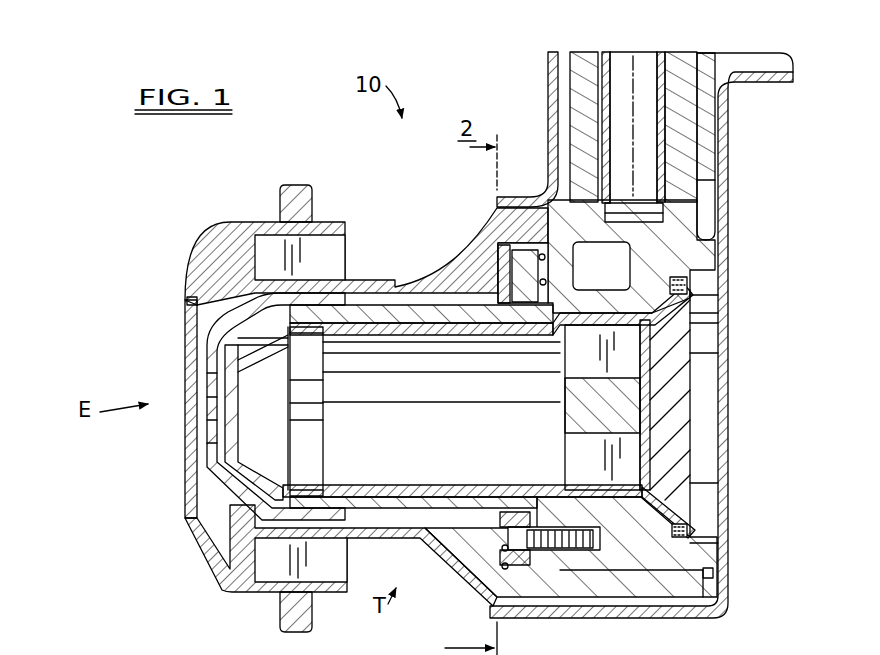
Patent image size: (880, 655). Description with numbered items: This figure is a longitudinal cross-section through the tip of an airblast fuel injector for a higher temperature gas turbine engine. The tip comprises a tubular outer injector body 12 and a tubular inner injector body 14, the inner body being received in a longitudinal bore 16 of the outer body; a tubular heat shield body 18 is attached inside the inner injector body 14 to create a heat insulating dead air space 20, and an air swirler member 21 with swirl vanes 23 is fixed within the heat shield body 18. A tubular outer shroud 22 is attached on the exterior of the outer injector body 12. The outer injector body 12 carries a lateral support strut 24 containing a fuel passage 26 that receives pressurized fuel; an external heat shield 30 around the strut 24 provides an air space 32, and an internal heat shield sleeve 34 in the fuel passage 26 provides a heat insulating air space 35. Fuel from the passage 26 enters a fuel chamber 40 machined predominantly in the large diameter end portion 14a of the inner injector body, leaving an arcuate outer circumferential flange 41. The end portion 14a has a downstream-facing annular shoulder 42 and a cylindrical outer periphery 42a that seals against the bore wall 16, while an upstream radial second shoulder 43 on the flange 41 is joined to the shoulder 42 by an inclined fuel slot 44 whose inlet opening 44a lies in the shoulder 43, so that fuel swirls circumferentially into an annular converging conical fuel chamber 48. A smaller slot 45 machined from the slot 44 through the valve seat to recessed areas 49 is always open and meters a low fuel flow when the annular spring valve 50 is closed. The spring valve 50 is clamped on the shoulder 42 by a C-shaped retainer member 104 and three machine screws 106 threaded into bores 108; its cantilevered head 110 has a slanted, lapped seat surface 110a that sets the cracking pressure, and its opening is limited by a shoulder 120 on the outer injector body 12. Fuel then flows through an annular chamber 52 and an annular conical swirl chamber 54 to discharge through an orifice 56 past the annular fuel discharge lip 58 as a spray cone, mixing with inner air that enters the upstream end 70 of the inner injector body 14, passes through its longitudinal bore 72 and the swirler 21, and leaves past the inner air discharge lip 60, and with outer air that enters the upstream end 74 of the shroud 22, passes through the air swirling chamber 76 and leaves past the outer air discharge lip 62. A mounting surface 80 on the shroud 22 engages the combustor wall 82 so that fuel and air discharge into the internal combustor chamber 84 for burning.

The outer injector body 12 is at (365, 280).
The inner injector body 14 is at (427, 322).
The large diameter end portion 14a is at (687, 262).
The longitudinal bore 16 is at (580, 550).
The tubular heat shield body 18 is at (697, 308).
The heat insulating dead air space 20 is at (383, 485).
The air swirler member 21 is at (652, 407).
The tubular outer shroud 22 is at (236, 220).
The swirl vanes 23 is at (563, 380).
The support strut 24 is at (585, 52).
The fuel passage 26 is at (645, 52).
The external heat shield 30 is at (550, 70).
The air space 32 is at (562, 83).
The internal heat shield sleeve 34 is at (664, 150).
The heat insulating air space 35 is at (605, 52).
The fuel chamber 40 is at (652, 252).
The arcuate outer circumferential flange 41 is at (535, 198).
The downstream-facing annular shoulder 42 is at (540, 511).
The cylindrical outer periphery 42a is at (547, 566).
The second shoulder 43 is at (578, 252).
The fuel slot 44 is at (533, 332).
The inlet opening 44a is at (583, 278).
The smaller transversely extending slot 45 is at (500, 322).
The annular converging conical fuel chamber 48 is at (470, 520).
The recessed areas 49 is at (505, 204).
The spring valve 50 is at (528, 512).
The annular chamber 52 is at (387, 517).
The annular conical swirl chamber 54 is at (245, 493).
The orifice 56 is at (206, 441).
The annular fuel discharge lip 58 is at (206, 466).
The inner air discharge lip 60 is at (235, 462).
The outer air discharge lip 62 is at (186, 304).
The upstream end 70 is at (730, 335).
The cylindrical longitudinal bore 72 is at (434, 430).
The upstream end 74 is at (345, 242).
The air swirling chamber 76 is at (215, 268).
The mounting surface 80 is at (310, 222).
The combustor wall 82 is at (297, 184).
The internal combustor chamber 84 is at (140, 366).
The C-shaped retainer member 104 is at (502, 567).
The machine screws 106 is at (502, 549).
The threaded bores 108 is at (594, 572).
The head 110 is at (510, 256).
The seat surface 110a is at (504, 246).
The shoulder 120 is at (497, 270).